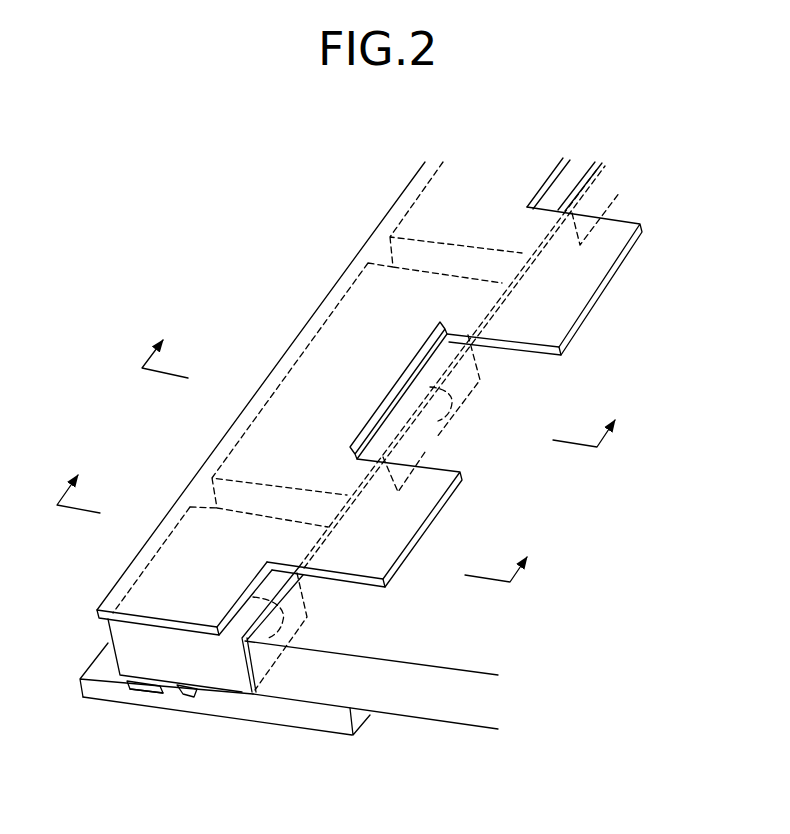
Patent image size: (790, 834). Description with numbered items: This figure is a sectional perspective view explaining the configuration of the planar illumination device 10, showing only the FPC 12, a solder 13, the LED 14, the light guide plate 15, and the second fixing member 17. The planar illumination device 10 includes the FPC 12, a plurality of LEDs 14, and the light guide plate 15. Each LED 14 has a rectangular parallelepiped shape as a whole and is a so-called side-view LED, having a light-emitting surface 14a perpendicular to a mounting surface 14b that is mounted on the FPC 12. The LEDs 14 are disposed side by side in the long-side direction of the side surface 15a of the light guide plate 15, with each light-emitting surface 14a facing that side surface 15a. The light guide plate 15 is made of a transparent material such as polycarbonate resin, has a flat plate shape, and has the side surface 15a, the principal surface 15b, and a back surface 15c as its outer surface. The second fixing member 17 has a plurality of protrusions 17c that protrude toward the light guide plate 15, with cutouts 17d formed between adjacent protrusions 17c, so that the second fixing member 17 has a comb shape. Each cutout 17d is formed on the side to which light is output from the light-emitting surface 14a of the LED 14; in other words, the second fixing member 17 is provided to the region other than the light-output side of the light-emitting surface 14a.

The planar illumination device 10 is at (672, 147).
The FPC 12 is at (253, 713).
The solder 13 is at (155, 686).
The LED 14 is at (170, 533).
The light-emitting surface 14a is at (430, 387).
The mounting surface 14b is at (178, 699).
The light guide plate 15 is at (342, 487).
The side surface 15a is at (246, 682).
The principal surface 15b is at (441, 666).
The back surface 15c is at (474, 729).
The second fixing member 17 is at (337, 280).
The protrusion 17c is at (563, 277).
The cutout 17d is at (499, 396).